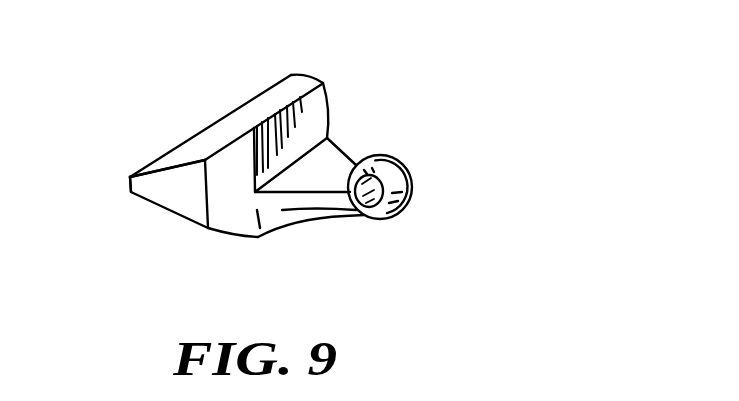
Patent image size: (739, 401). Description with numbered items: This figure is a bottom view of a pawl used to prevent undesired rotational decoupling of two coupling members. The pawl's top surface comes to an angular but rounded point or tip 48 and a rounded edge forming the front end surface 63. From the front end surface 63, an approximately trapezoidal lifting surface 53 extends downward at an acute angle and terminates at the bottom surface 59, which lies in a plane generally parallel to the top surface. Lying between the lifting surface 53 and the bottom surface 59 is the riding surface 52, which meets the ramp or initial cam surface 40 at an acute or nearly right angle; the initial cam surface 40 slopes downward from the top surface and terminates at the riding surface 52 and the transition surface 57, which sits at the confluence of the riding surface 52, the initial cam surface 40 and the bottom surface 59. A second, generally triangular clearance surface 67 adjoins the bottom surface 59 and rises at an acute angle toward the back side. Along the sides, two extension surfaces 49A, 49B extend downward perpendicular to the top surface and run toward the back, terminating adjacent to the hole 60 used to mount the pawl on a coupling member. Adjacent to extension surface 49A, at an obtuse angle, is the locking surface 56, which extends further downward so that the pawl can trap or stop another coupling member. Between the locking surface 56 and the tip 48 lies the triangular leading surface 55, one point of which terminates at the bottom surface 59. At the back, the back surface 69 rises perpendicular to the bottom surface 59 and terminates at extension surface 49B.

The initial cam surface 40 is at (203, 160).
The tip 48 is at (128, 194).
The extension surface 49A is at (345, 218).
The extension surface 49B is at (352, 160).
The riding surface 52 is at (220, 120).
The lifting surface 53 is at (176, 160).
The leading surface 55 is at (188, 210).
The locking surface 56 is at (242, 217).
The transition surface 57 is at (291, 74).
The bottom surface 59 is at (257, 118).
The hole 60 is at (381, 207).
The front end surface 63 is at (142, 160).
The clearance surface 67 is at (307, 85).
The back surface 69 is at (310, 115).